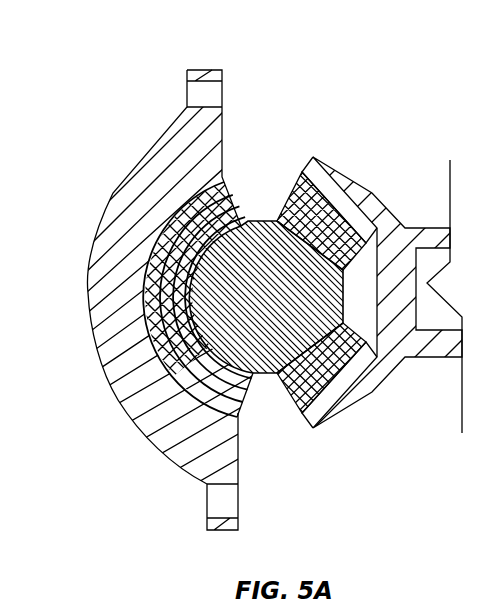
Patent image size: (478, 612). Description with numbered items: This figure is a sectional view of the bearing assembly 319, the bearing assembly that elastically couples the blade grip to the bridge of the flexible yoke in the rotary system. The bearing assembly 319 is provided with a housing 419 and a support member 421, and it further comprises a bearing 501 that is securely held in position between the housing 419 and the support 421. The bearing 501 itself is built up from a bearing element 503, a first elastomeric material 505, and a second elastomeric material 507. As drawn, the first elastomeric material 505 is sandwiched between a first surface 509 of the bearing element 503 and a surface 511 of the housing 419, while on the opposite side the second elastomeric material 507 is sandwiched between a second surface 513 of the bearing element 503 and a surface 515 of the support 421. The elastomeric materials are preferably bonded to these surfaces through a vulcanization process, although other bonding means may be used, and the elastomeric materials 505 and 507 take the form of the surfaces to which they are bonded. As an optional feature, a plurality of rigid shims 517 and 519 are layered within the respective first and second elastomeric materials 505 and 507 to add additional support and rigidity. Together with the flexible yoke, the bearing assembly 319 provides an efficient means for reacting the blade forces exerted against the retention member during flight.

The second bearing assembly 319 is at (105, 63).
The housing 419 is at (117, 187).
The bearing element 503 is at (127, 418).
The first elastomeric material 505 is at (158, 436).
The surface of housing 511 is at (135, 286).
The first surface of bearing element 509 is at (182, 314).
The rigid shims 517 is at (240, 418).
The bearing 501 is at (296, 108).
The second surface of bearing element 513 is at (378, 193).
The second elastomeric material 507 is at (367, 192).
The support member 421 is at (337, 428).
The rigid shims 519 is at (318, 185).
The surface of support 515 is at (370, 388).